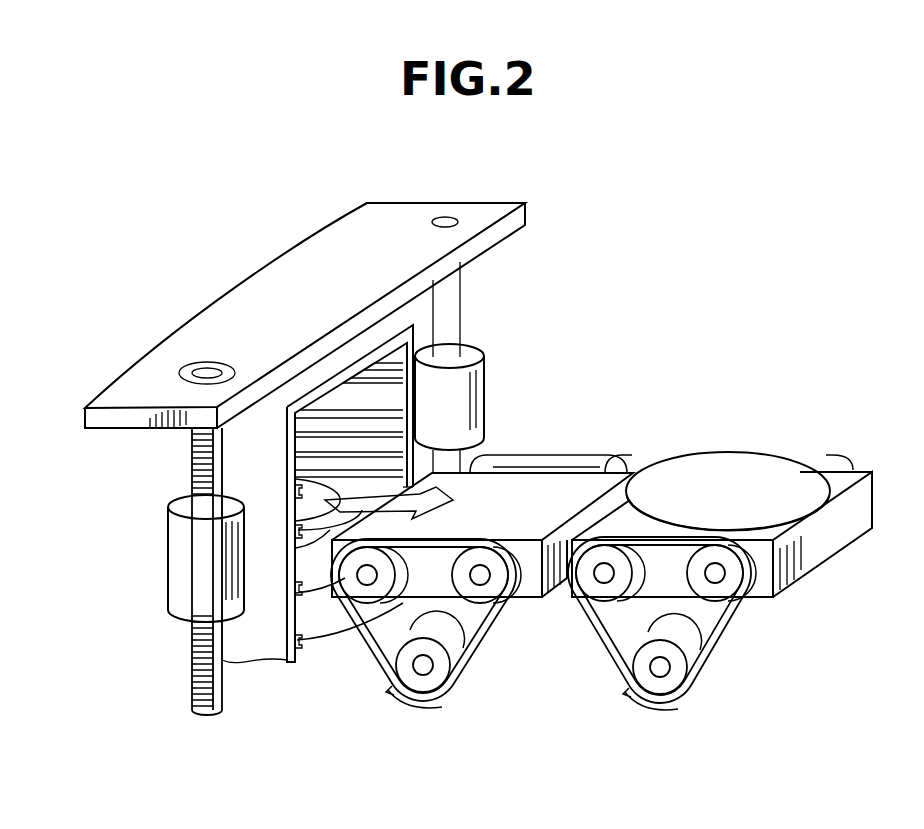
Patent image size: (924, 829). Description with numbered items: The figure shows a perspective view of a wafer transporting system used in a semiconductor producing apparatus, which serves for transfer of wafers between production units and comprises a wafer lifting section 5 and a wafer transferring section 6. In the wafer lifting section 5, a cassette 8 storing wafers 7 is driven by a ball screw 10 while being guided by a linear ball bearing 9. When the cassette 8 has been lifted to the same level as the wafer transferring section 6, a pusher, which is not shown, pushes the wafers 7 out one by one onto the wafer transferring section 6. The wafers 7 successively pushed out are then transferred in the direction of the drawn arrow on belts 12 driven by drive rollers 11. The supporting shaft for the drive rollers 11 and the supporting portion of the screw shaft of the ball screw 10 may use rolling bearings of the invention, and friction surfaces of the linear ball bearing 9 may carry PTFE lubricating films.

The wafer lifting section 5 is at (158, 696).
The wafer transferring section 6 is at (668, 374).
The wafer 7 is at (318, 487).
The cassette 8 is at (345, 357).
The linear ball bearing 9 is at (470, 365).
The ball screw 10 is at (175, 552).
The drive roller 11 is at (440, 678).
The belt 12 is at (505, 598).